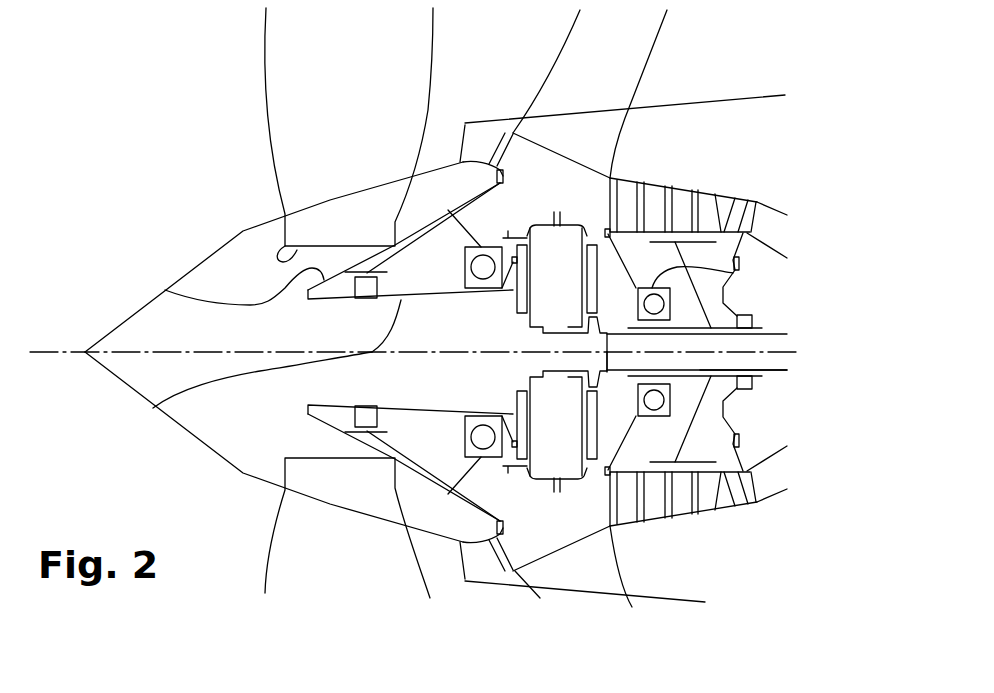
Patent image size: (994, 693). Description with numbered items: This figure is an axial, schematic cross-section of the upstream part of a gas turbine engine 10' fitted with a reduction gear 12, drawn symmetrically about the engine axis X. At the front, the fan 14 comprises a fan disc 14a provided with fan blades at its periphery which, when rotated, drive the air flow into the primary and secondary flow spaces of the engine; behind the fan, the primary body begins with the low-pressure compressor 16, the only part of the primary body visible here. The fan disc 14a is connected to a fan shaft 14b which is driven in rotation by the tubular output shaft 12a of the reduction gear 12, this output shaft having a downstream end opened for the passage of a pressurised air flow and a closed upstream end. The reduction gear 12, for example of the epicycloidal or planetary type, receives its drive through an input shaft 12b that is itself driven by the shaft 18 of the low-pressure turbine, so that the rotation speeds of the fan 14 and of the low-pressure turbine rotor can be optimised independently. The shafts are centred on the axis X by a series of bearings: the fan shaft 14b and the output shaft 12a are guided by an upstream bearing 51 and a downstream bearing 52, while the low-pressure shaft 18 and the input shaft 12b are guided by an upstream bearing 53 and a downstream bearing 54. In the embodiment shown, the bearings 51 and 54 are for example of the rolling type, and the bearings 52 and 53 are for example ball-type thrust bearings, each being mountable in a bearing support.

The axis X is at (53, 352).
The engine 10' is at (660, 308).
The reduction gear 12 is at (570, 214).
The output shaft 12a is at (155, 406).
The input shaft 12b is at (607, 352).
The fan 14 is at (240, 92).
The fan disc 14a is at (254, 229).
The fan shaft 14b is at (262, 305).
The low-pressure compressor 16 is at (662, 176).
The low-pressure turbine shaft 18 is at (775, 370).
The upstream bearing 51 is at (365, 282).
The downstream bearing 52 is at (467, 252).
The upstream bearing 53 is at (733, 273).
The downstream bearing 54 is at (752, 320).